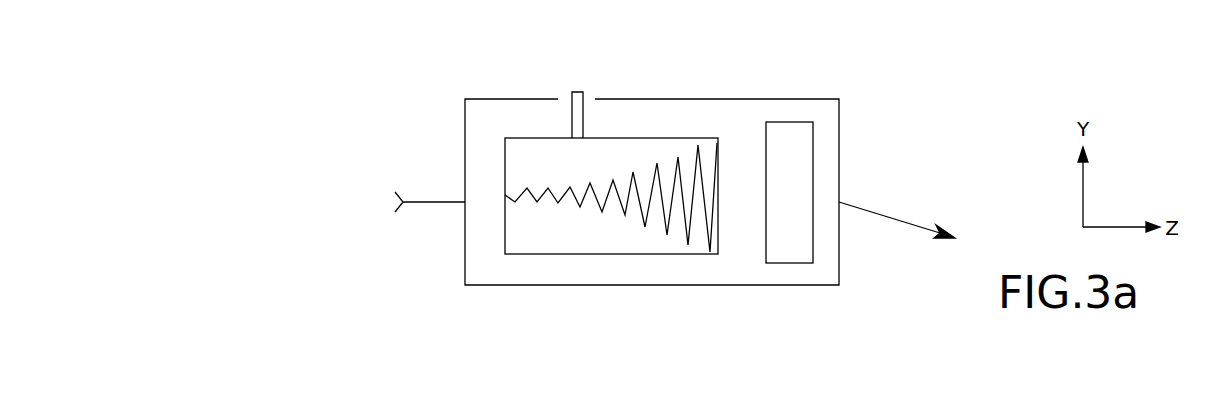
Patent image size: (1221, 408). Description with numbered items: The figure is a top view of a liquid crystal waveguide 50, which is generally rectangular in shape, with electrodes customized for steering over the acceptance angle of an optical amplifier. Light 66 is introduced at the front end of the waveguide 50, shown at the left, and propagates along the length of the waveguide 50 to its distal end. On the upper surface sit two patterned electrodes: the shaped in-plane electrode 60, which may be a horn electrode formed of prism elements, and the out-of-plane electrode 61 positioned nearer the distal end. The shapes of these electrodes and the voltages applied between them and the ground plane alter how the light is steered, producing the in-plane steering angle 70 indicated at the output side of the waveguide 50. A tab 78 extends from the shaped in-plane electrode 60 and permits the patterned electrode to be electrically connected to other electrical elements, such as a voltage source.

The waveguide 50 is at (733, 82).
The shaped in-plane electrode 60 is at (645, 254).
The out-of-plane electrode 61 is at (813, 173).
The light 66 is at (422, 203).
The in-plane steering angle 70 is at (902, 218).
The tab 78 is at (577, 92).